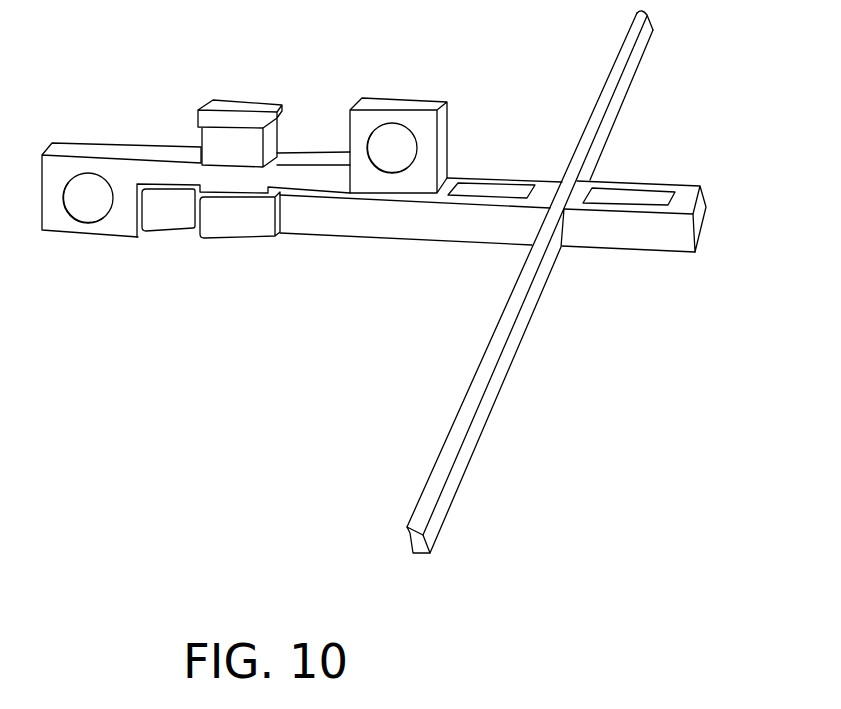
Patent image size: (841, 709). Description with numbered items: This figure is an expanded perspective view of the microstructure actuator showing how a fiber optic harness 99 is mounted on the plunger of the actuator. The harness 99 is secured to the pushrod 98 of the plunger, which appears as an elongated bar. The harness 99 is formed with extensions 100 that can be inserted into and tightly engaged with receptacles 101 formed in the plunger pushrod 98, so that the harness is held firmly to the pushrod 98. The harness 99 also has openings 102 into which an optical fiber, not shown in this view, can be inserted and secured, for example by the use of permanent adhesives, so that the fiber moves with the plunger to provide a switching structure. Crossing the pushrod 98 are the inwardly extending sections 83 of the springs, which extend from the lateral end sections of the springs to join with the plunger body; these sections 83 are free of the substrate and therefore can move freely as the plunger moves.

The inwardly extending sections 83 is at (625, 97).
The pushrod 98 is at (330, 232).
The fiber optic harness 99 is at (88, 138).
The extensions 100 is at (250, 100).
The receptacles 101 is at (242, 227).
The openings 102 is at (88, 195).